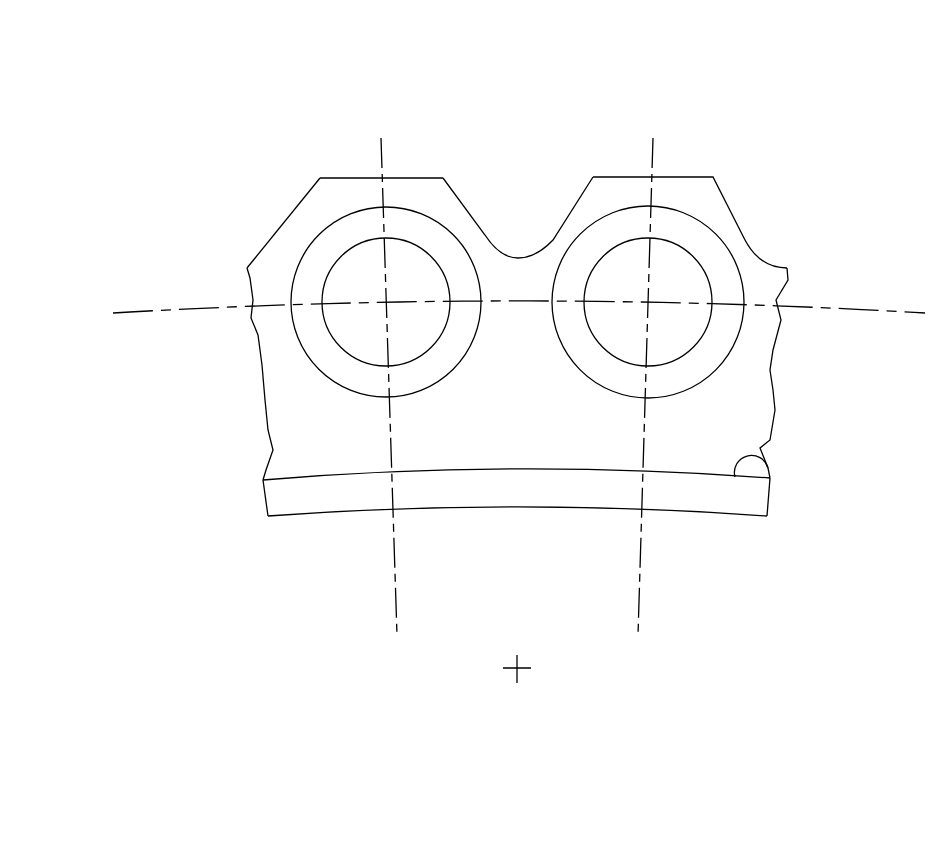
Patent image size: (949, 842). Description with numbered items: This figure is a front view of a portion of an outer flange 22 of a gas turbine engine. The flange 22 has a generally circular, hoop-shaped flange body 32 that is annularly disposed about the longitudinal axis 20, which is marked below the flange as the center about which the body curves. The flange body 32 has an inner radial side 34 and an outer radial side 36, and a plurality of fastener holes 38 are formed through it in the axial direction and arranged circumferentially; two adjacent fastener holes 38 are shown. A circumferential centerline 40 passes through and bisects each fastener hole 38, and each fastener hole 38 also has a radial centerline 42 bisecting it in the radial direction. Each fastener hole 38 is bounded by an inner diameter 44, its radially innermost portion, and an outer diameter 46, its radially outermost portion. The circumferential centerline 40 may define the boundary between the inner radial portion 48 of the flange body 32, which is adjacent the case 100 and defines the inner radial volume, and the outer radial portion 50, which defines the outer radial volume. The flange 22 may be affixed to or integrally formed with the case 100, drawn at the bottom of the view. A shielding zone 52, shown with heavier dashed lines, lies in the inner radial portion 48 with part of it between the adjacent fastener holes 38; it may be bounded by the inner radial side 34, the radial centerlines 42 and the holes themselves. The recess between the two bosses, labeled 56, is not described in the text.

The longitudinal axis 20 is at (522, 664).
The flange 22 is at (708, 122).
The flange body 32 is at (752, 400).
The inner radial side 34 is at (770, 470).
The outer radial side 36 is at (413, 177).
The fastener holes 38 is at (708, 335).
The circumferential centerline 40 is at (893, 312).
The radial centerline 42 is at (395, 607).
The inner diameter 44 is at (385, 366).
The outer diameter 46 is at (381, 236).
The inner radial portion 48 is at (285, 367).
The outer radial portion 50 is at (293, 284).
The shielding zone 52 is at (516, 381).
The recess 56 is at (521, 206).
The case 100 is at (272, 490).